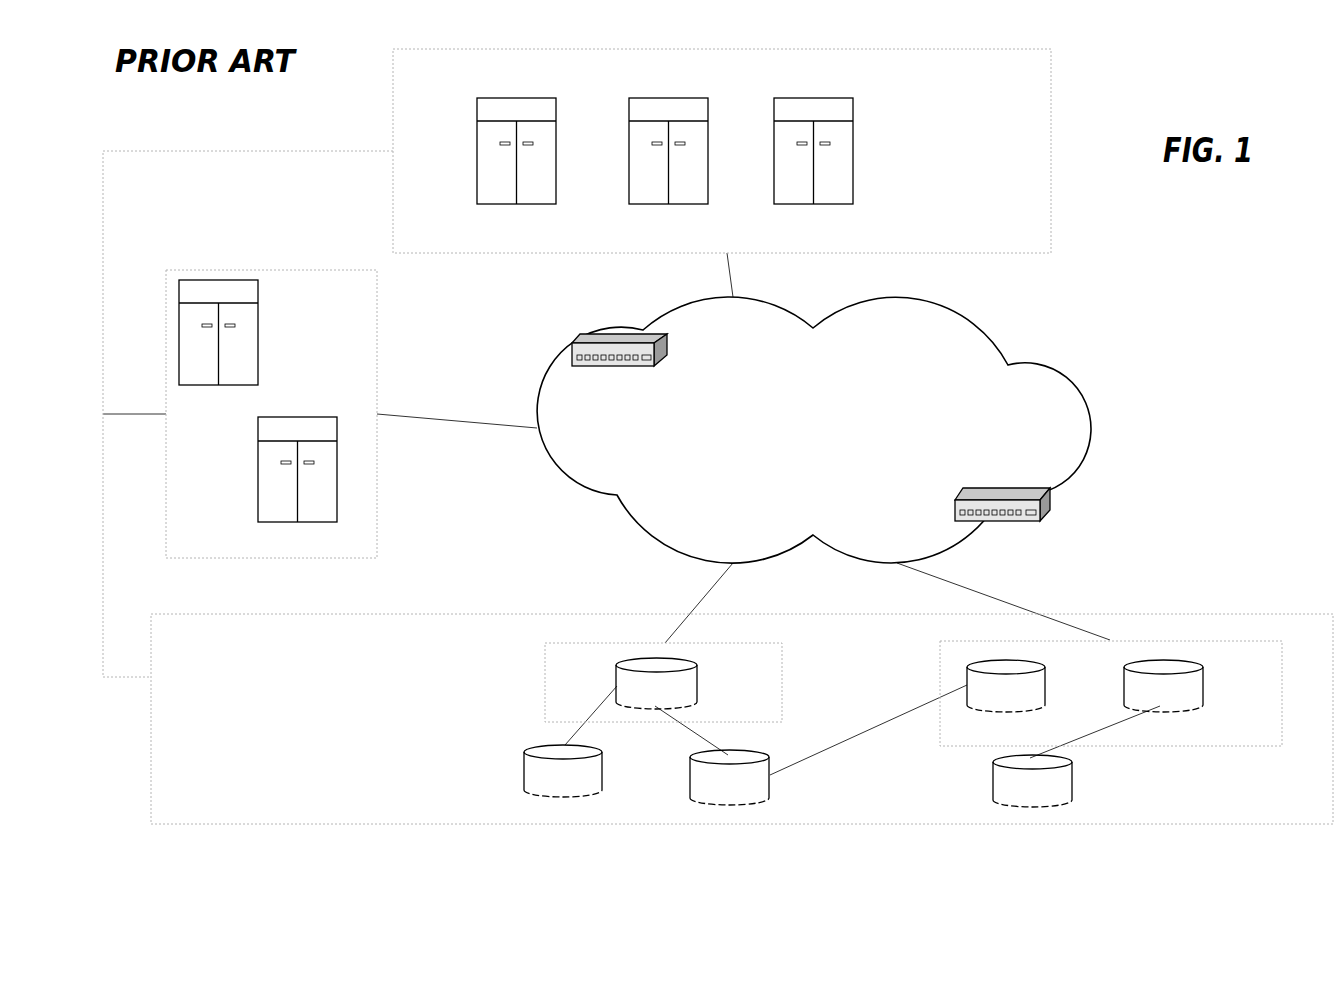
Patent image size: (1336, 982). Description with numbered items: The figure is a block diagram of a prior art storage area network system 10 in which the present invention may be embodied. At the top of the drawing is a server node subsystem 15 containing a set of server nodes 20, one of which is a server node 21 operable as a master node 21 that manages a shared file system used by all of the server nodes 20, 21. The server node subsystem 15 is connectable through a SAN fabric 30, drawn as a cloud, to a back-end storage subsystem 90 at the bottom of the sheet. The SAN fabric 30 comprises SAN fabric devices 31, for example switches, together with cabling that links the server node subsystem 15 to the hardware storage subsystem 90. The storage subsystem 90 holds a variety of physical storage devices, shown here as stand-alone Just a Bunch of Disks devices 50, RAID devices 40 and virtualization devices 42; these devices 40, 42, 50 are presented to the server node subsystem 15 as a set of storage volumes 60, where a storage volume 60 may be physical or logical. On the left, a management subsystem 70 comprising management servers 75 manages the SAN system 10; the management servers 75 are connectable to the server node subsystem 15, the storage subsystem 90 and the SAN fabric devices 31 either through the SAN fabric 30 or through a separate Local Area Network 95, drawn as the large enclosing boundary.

The storage area network (SAN) system 10 is at (1067, 340).
The server node subsystem 15 is at (1051, 150).
The server node 20 is at (629, 122).
The master node 21 is at (477, 122).
The SAN fabric 30 is at (550, 392).
The SAN fabric device 31 is at (617, 338).
The RAID device 40 is at (782, 682).
The virtualization device 42 is at (1182, 746).
The JBOD device 50 is at (602, 770).
The storage volume 60 is at (1045, 685).
The management subsystem 70 is at (272, 270).
The management server 75 is at (258, 332).
The back-end storage subsystem 90 is at (492, 614).
The Local Area Network (LAN) 95 is at (182, 151).